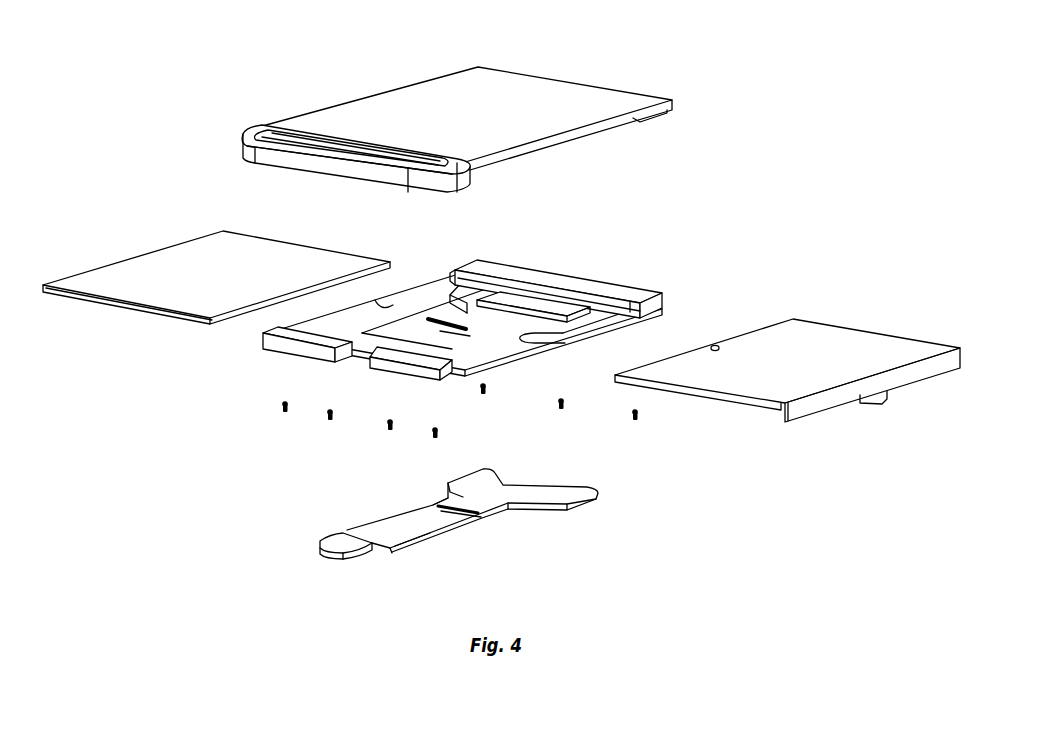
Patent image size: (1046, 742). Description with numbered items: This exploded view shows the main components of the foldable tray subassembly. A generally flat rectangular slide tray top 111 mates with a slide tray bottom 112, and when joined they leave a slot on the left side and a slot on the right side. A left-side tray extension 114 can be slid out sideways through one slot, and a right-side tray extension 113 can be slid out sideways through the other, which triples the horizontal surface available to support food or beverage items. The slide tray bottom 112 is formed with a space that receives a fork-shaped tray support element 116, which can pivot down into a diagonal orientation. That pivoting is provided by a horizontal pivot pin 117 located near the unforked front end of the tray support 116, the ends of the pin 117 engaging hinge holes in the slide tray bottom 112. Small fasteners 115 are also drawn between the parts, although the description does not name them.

The slide tray top 111 is at (582, 72).
The slide tray bottom 112 is at (605, 273).
The right-side tray extension 113 is at (148, 237).
The left-side tray extension 114 is at (823, 318).
The screws 115 is at (638, 428).
The fork-shaped tray support element 116 is at (595, 508).
The horizontal pivot pin 117 is at (428, 548).